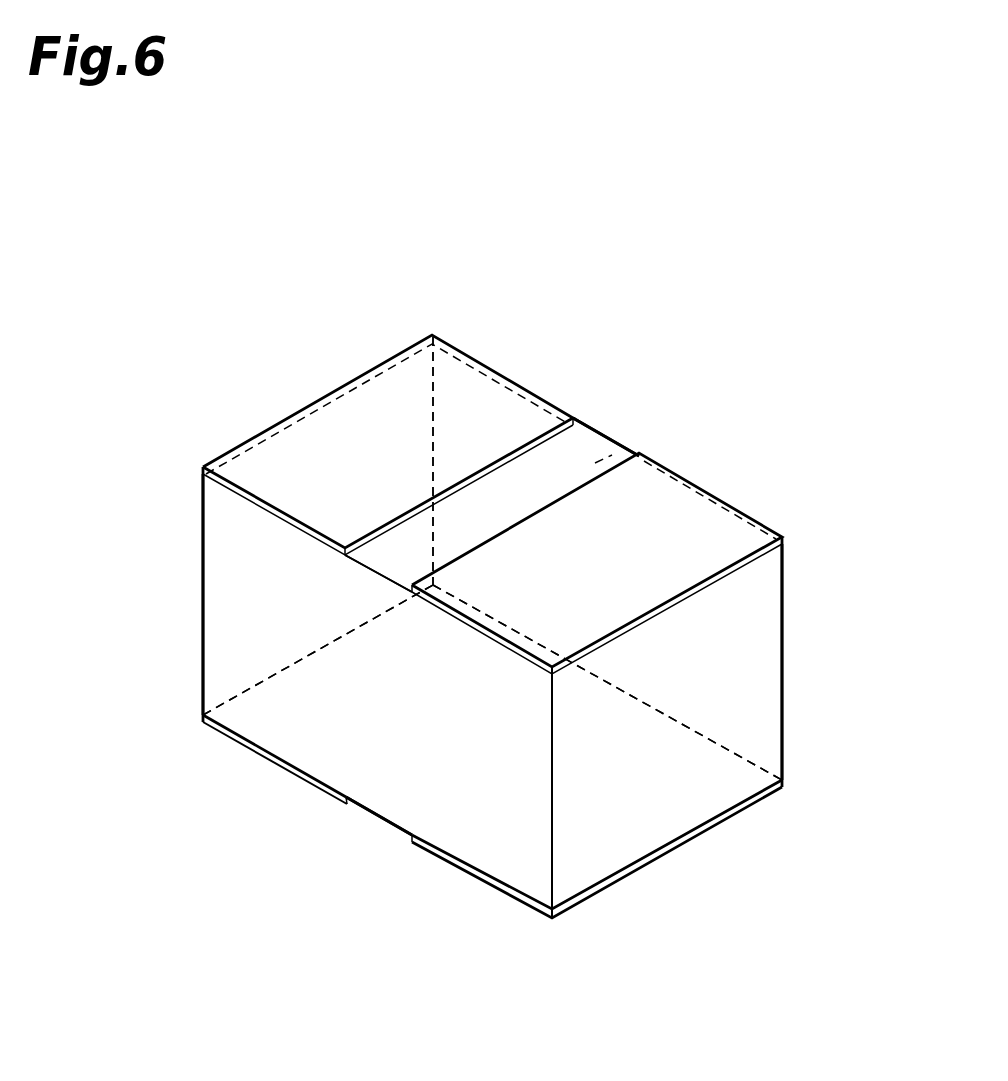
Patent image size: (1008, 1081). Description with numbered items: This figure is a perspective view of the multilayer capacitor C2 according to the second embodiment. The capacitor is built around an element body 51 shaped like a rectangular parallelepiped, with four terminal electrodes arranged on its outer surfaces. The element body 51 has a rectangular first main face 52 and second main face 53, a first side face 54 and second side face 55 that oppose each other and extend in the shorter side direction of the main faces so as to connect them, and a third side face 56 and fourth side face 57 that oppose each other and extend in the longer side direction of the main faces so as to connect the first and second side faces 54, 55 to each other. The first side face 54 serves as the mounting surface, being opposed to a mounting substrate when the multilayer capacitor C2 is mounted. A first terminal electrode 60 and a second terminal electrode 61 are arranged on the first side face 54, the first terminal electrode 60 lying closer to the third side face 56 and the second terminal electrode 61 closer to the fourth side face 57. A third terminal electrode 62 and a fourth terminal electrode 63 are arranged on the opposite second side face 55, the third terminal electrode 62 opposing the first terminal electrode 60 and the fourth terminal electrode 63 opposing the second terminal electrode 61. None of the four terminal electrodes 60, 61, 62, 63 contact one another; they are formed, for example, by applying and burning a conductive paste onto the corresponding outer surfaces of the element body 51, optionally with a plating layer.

The multilayer capacitor C2 is at (797, 343).
The element body 51 is at (594, 428).
The first main face 52 is at (220, 618).
The second main face 53 is at (617, 444).
The first side face 54 is at (398, 782).
The second side face 55 is at (500, 493).
The third side face 56 is at (237, 560).
The fourth side face 57 is at (762, 722).
The first terminal electrode 60 is at (278, 768).
The second terminal electrode 61 is at (498, 893).
The third terminal electrode 62 is at (497, 370).
The fourth terminal electrode 63 is at (727, 498).